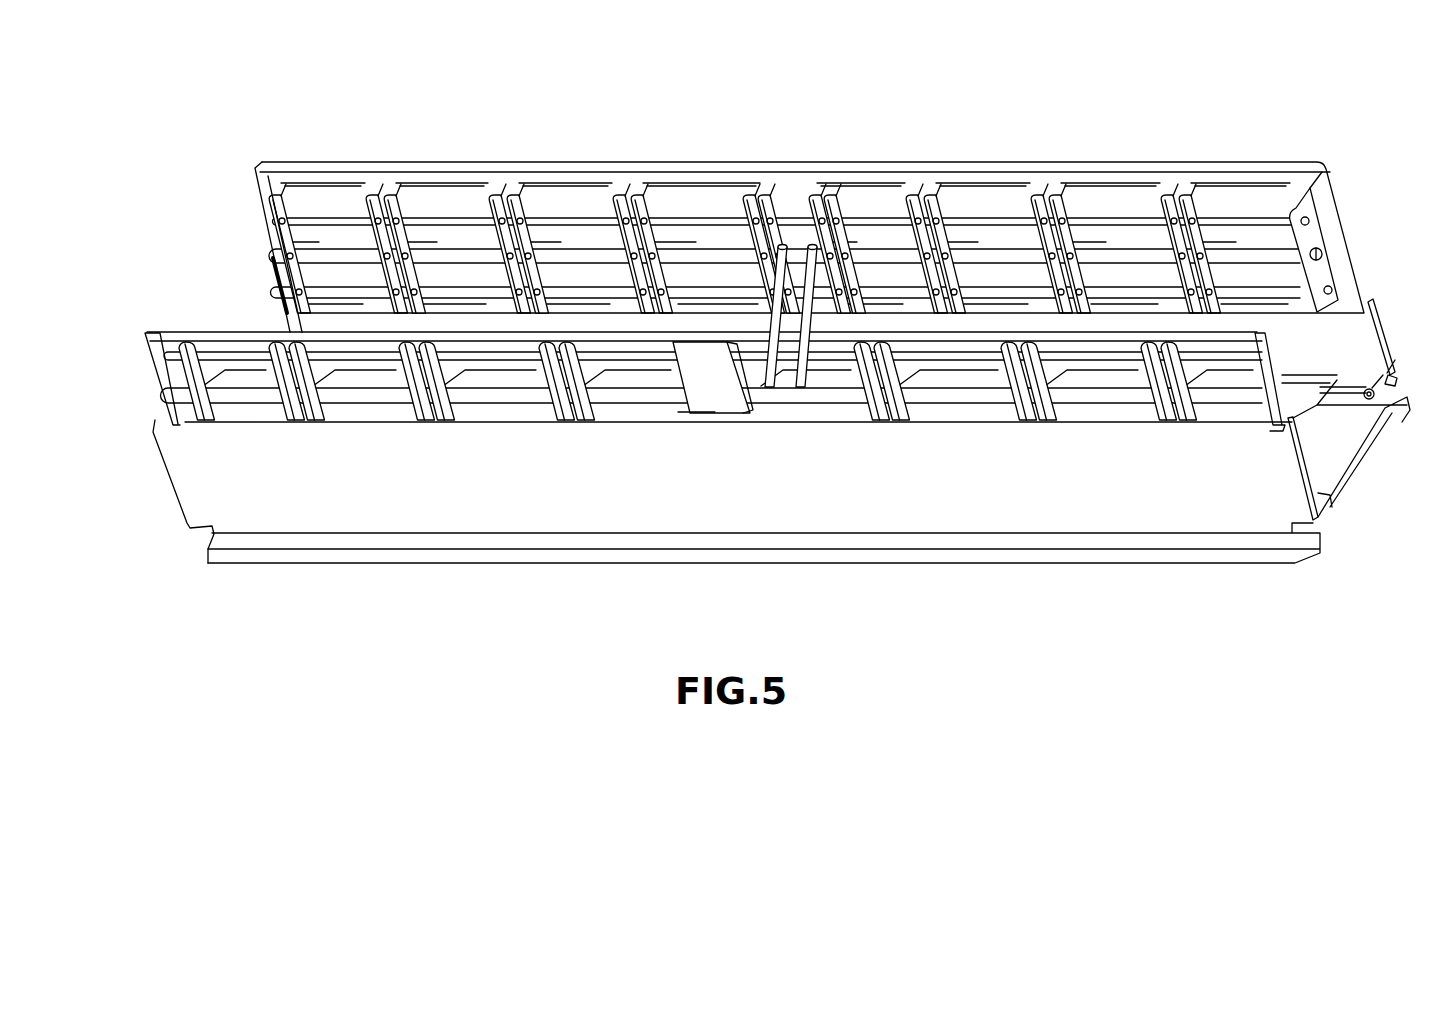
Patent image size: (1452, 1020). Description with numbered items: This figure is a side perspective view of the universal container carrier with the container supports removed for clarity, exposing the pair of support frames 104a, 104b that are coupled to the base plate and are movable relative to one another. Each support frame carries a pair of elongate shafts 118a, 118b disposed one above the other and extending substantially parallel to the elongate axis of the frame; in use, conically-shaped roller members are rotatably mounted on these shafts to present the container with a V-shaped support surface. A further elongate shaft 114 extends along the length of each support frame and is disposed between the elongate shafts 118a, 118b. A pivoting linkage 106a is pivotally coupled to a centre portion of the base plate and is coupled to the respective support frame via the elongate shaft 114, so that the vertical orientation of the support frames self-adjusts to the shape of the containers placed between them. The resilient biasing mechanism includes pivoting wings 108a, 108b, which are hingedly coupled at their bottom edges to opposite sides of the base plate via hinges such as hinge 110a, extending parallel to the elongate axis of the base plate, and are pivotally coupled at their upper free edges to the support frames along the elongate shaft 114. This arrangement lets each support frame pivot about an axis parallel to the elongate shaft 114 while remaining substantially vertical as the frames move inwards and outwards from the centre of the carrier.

The support frame 104a is at (1078, 165).
The support frame 104b is at (170, 332).
The pivoting linkage 106a is at (790, 260).
The pivoting wing 108a is at (1374, 318).
The pivoting wing 108b is at (827, 495).
The hinge 110a is at (1375, 393).
The elongate shaft 114 is at (822, 250).
The elongate shaft 118a is at (413, 222).
The elongate shaft 118b is at (562, 293).